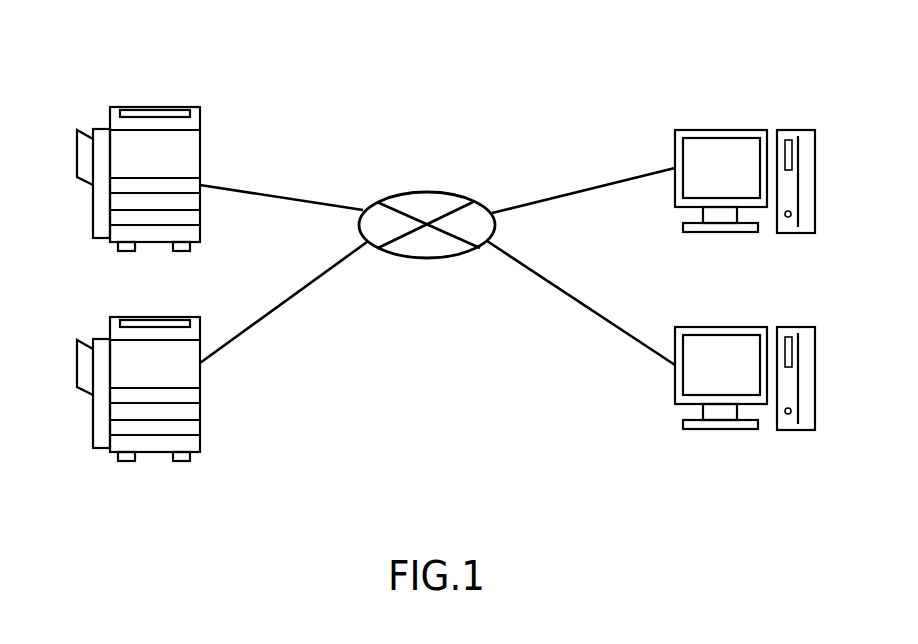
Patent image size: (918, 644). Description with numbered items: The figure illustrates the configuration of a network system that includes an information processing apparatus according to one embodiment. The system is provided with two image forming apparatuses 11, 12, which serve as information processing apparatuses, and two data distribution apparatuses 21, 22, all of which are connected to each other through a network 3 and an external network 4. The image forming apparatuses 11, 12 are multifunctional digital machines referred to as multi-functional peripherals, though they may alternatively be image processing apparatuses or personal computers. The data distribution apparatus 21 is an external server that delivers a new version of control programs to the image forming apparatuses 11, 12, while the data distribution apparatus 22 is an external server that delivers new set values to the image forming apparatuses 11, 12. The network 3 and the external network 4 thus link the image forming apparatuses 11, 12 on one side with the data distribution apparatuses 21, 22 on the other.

The image forming apparatus 11 is at (158, 107).
The image forming apparatus 12 is at (177, 317).
The data distribution apparatus 21 is at (720, 128).
The data distribution apparatus 22 is at (720, 325).
The network 3 is at (320, 273).
The external network 4 is at (423, 190).